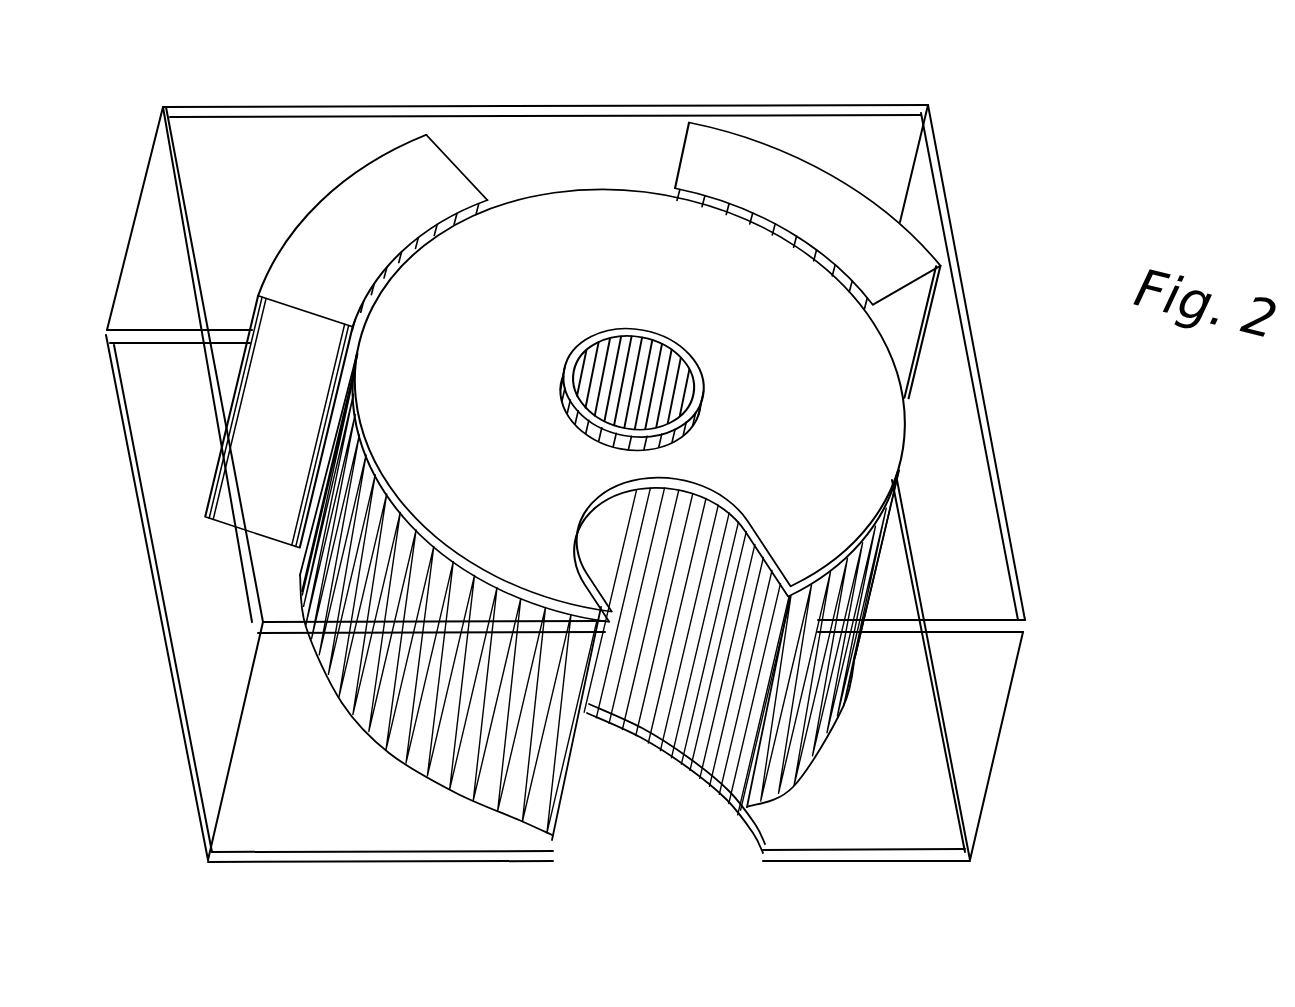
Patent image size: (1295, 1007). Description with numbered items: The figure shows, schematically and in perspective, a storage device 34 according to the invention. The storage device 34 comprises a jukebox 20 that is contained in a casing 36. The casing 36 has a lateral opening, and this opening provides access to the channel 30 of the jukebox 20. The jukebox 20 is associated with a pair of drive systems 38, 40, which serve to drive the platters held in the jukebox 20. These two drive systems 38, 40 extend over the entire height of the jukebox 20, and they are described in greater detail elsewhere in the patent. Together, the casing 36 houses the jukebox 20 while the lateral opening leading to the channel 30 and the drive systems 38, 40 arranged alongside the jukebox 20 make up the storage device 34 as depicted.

The jukebox 20 is at (694, 499).
The channel 30 is at (690, 520).
The storage device 34 is at (611, 483).
The casing 36 is at (1010, 576).
The drive system 38 is at (428, 148).
The drive system 40 is at (720, 145).